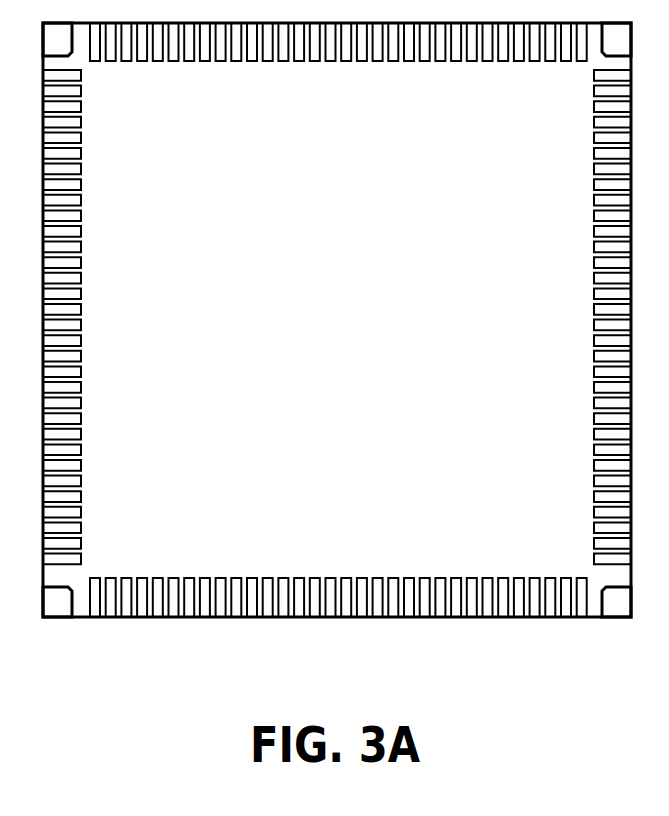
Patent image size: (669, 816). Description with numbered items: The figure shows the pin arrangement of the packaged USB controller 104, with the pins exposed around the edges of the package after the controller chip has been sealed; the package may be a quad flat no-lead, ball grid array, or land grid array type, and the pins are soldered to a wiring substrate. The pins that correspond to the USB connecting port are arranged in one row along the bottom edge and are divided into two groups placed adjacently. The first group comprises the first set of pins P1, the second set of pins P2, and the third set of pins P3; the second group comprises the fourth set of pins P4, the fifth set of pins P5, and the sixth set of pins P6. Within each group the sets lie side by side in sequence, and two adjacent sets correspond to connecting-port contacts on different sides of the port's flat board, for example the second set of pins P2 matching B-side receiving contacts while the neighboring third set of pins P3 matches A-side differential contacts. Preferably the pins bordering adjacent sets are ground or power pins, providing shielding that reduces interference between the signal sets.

The USB controller 104 is at (337, 320).
The first set of pins P1 is at (91, 572).
The second set of pins P2 is at (155, 572).
The third set of pins P3 is at (219, 572).
The fourth set of pins P4 is at (281, 572).
The fifth set of pins P5 is at (396, 572).
The sixth set of pins P6 is at (406, 572).